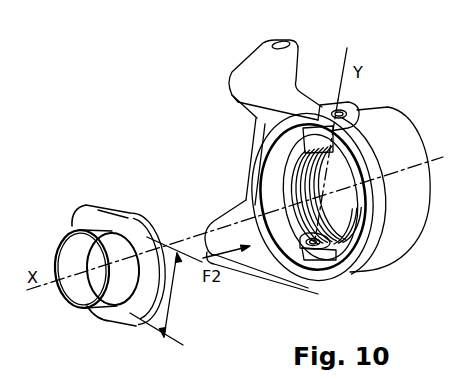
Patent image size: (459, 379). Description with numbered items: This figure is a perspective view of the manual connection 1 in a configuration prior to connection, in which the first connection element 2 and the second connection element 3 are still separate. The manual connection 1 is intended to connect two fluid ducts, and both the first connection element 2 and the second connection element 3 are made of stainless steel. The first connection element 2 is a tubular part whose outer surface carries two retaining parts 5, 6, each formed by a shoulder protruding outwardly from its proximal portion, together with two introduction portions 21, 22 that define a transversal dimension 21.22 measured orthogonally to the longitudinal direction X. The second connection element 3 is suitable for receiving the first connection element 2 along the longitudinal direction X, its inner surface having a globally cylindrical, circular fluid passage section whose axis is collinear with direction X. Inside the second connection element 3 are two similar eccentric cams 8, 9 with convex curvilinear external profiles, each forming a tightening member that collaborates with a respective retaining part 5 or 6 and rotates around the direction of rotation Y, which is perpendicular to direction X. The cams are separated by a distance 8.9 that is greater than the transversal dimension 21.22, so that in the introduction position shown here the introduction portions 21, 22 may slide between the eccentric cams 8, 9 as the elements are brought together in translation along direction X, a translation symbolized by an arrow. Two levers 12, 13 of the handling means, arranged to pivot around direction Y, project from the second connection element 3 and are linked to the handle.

The manual connection 1 is at (160, 54).
The first connection element 2 is at (133, 245).
The second connection element 3 is at (319, 172).
The retaining part 5 is at (58, 232).
The retaining part 6 is at (141, 299).
The eccentric cam 8 is at (305, 258).
The eccentric cam 9 is at (313, 136).
The distance separating the eccentric cams 8.9 is at (311, 144).
The lever 12 is at (225, 233).
The lever 13 is at (248, 81).
The introduction portion 21 is at (119, 207).
The introduction portion 22 is at (112, 306).
The transversal dimension 21.22 is at (176, 291).